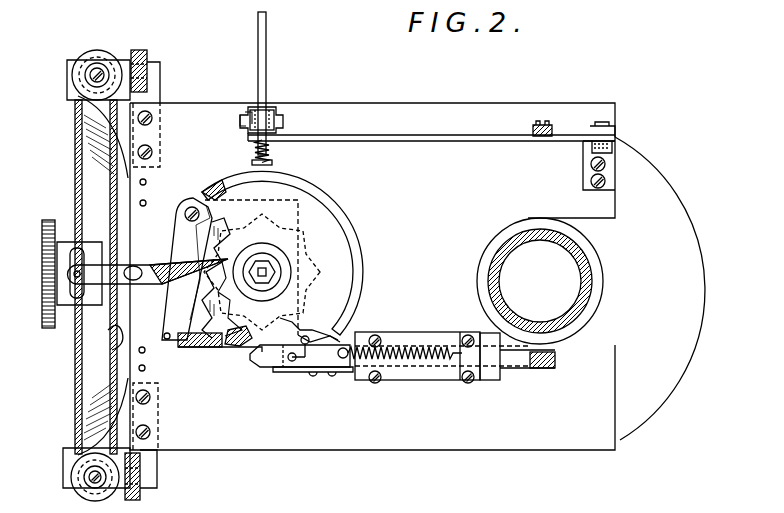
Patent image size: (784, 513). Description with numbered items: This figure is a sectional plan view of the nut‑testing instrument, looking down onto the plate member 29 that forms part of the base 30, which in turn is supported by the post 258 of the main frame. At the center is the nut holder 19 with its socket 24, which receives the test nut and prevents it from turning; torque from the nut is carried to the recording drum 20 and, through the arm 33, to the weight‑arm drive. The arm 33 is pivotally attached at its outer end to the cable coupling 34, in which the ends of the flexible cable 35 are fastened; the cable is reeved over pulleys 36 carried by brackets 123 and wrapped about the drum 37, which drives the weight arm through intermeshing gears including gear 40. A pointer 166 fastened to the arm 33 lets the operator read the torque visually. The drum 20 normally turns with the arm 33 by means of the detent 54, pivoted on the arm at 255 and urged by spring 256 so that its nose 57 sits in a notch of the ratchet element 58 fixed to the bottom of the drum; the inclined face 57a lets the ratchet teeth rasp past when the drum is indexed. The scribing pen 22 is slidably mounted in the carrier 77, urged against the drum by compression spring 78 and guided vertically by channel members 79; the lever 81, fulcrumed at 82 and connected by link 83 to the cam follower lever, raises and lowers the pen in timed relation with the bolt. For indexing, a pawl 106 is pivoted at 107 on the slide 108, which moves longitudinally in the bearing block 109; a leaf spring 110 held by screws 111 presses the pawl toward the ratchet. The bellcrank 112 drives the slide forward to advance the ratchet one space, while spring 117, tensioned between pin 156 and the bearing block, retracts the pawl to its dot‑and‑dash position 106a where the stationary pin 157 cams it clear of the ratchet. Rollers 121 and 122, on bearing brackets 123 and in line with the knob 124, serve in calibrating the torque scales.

The nut holder 19 is at (272, 260).
The recording drum 20 is at (358, 249).
The scribing pen 22 is at (267, 73).
The socket 24 is at (268, 262).
The plate member 29 is at (507, 96).
The base 30 is at (709, 239).
The arm 33 is at (170, 257).
The cable coupling 34 is at (42, 281).
The flexible cable 35 is at (73, 195).
The pulleys 36 is at (101, 51).
The drum 37 is at (116, 332).
The gear 40 is at (42, 319).
The detent 54 is at (178, 234).
The nose 57 is at (216, 278).
The face 57a is at (213, 299).
The ratchet element 58 is at (236, 348).
The carrier 77 is at (284, 118).
The compression spring 78 is at (273, 158).
The channel members 79 is at (240, 120).
The lever 81 is at (446, 141).
The fulcrum 82 is at (618, 137).
The link 83 is at (549, 141).
The pawl 106 is at (270, 366).
The retracted pawl position 106a is at (293, 328).
The pawl pivot 107 is at (291, 362).
The slide 108 is at (349, 366).
The bearing block 109 is at (416, 381).
The leaf spring 110 is at (311, 374).
The screws 111 is at (332, 374).
The bellcrank 112 is at (545, 368).
The spring 117 is at (426, 346).
The roller 121 is at (142, 52).
The roller 122 is at (142, 495).
The brackets 123 is at (158, 97).
The knob 124 is at (137, 284).
The pin 156 is at (352, 342).
The stationary pin 157 is at (312, 332).
The pointer 166 is at (82, 299).
The detent pivot 255 is at (191, 203).
The spring 256 is at (195, 348).
The post 258 is at (580, 262).